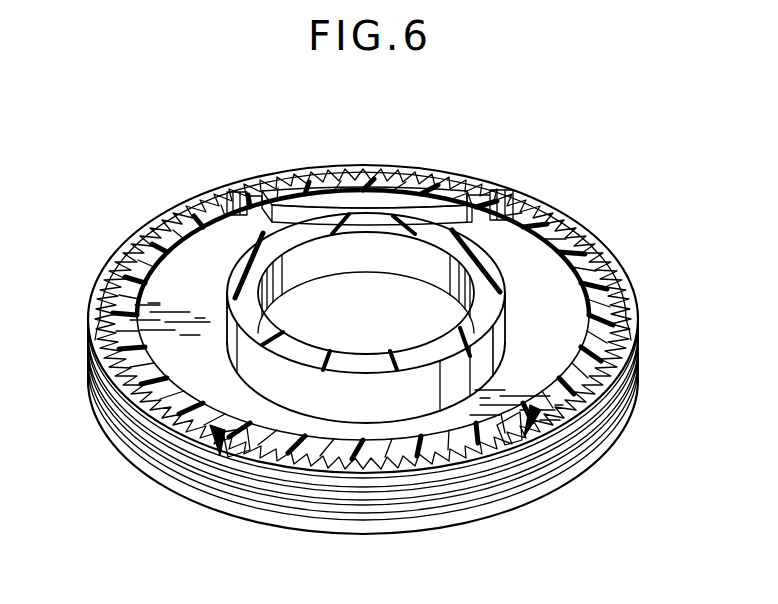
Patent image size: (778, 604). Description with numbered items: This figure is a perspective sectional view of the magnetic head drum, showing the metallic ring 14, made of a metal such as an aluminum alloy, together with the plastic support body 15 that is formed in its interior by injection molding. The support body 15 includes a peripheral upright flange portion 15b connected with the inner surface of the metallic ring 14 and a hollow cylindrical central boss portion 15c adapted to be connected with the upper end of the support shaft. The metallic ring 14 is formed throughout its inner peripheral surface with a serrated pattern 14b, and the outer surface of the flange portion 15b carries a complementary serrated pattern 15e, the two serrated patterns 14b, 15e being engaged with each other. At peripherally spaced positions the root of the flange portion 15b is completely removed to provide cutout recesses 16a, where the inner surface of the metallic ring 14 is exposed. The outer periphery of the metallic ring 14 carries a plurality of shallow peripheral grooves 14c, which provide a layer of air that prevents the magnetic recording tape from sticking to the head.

The metallic ring 14 is at (622, 258).
The serrated pattern 14b is at (612, 298).
The shallow peripheral grooves 14c is at (503, 477).
The support body 15 is at (530, 277).
The flange portion 15b is at (608, 328).
The central boss portion 15c is at (490, 362).
The serrated pattern 15e is at (592, 455).
The cutout recesses 16a is at (233, 202).